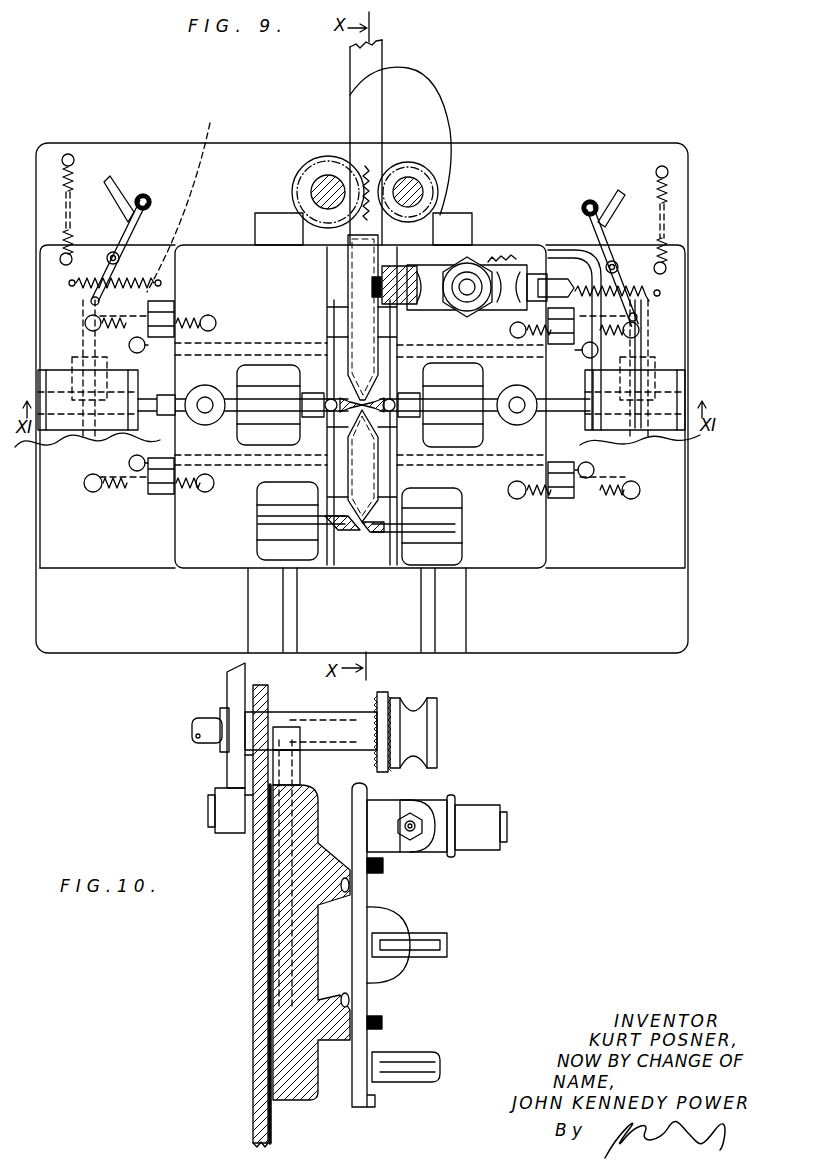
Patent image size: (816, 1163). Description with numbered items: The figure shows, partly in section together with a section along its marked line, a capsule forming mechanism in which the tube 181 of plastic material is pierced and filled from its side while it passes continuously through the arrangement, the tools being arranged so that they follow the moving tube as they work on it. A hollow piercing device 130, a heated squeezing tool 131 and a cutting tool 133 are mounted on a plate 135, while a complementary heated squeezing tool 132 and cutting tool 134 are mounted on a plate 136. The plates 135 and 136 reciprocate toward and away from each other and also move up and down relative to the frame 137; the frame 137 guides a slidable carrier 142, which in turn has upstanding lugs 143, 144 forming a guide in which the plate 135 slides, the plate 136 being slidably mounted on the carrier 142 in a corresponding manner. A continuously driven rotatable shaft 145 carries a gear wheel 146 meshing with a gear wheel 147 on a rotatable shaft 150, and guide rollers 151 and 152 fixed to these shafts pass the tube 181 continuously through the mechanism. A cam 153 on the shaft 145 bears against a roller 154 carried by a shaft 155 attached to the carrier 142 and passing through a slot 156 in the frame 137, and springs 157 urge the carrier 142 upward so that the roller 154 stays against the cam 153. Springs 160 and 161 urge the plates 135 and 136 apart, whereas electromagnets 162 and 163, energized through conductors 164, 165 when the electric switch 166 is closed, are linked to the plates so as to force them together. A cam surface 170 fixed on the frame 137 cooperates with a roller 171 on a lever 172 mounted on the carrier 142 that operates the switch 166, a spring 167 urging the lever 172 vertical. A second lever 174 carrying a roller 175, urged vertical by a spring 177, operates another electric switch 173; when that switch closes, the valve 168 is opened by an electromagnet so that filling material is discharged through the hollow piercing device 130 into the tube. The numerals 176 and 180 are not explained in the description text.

In FIG. 9, the hollow piercing device 130 is at (375, 281).
In FIG. 9, the heated squeezing tool 131 is at (410, 398).
In FIG. 9, the complementary heated squeezing tool 132 is at (360, 398).
In FIG. 9, the cutting tool 133 is at (375, 524).
In FIG. 10, the cutting tool 133 is at (440, 1073).
In FIG. 9, the cutting tool 134 is at (302, 512).
In FIG. 10, the cutting tool 134 is at (447, 943).
In FIG. 9, the plate 135 is at (490, 548).
In FIG. 10, the plate 135 is at (370, 1102).
In FIG. 9, the plate 136 is at (200, 550).
In FIG. 9, the frame 137 is at (585, 628).
In FIG. 10, the frame 137 is at (258, 1099).
In FIG. 9, the carrier 142 is at (612, 548).
In FIG. 10, the carrier 142 is at (285, 1023).
In FIG. 10, the upstanding lug 143 is at (325, 1013).
In FIG. 10, the upstanding lug 144 is at (380, 868).
In FIG. 9, the rotatable shaft 145 is at (452, 198).
In FIG. 10, the rotatable shaft 145 is at (197, 719).
In FIG. 9, the gear wheel 146 is at (430, 170).
In FIG. 10, the gear wheel 146 is at (385, 694).
In FIG. 9, the gear wheel 147 is at (340, 228).
In FIG. 9, the rotatable shaft 150 is at (330, 177).
In FIG. 9, the guide roller 151 is at (412, 170).
In FIG. 10, the guide roller 151 is at (413, 722).
In FIG. 9, the guide roller 152 is at (318, 180).
In FIG. 9, the cam 153 is at (398, 87).
In FIG. 10, the cam 153 is at (235, 676).
In FIG. 9, the roller 154 is at (465, 178).
In FIG. 10, the roller 154 is at (238, 808).
In FIG. 10, the shaft 155 is at (216, 808).
In FIG. 10, the slot 156 is at (243, 755).
In FIG. 9, the springs 157 is at (60, 191).
In FIG. 9, the spring 160 is at (605, 497).
In FIG. 9, the spring 161 is at (114, 487).
In FIG. 9, the electromagnet 162 is at (660, 388).
In FIG. 9, the electromagnet 163 is at (57, 377).
In FIG. 9, the conductor 164 is at (581, 447).
In FIG. 9, the conductor 165 is at (140, 443).
In FIG. 9, the electric switch 166 is at (82, 298).
In FIG. 9, the spring 167 is at (185, 197).
In FIG. 9, the valve 168 is at (468, 283).
In FIG. 10, the valve 168 is at (478, 818).
In FIG. 9, the cam surface 170 is at (108, 182).
In FIG. 9, the roller 171 is at (146, 200).
In FIG. 9, the lever 172 is at (125, 230).
In FIG. 9, the electric switch 173 is at (648, 330).
In FIG. 9, the lever 174 is at (618, 218).
In FIG. 9, the roller 175 is at (590, 200).
In FIG. 9, the lever hook 176 is at (616, 200).
In FIG. 9, the spring 177 is at (647, 300).
In FIG. 9, the plunger 180 is at (555, 287).
In FIG. 9, the tube 181 is at (367, 63).